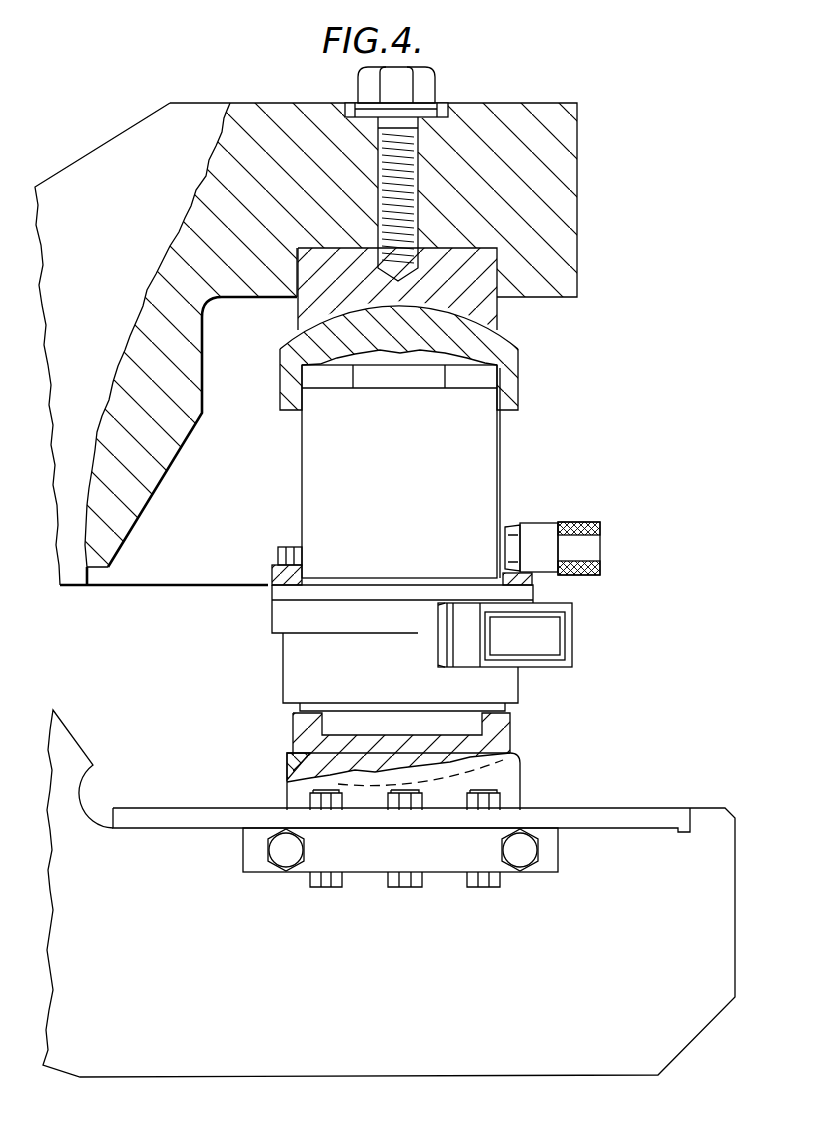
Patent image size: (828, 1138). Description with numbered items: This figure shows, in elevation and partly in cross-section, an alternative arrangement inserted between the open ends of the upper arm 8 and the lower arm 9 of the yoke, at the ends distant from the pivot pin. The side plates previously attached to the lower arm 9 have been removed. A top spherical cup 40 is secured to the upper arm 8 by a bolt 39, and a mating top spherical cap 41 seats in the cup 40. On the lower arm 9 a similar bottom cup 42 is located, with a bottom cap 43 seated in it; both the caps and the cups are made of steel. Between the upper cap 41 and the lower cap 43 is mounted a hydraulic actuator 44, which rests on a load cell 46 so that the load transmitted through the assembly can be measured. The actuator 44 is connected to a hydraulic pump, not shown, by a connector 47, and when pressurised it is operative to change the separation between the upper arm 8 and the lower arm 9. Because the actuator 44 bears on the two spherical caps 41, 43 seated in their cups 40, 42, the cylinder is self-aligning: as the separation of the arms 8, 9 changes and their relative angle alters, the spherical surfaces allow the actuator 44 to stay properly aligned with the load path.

The upper arm 8 is at (563, 168).
The bolt 39 is at (408, 83).
The top spherical cup 40 is at (497, 313).
The top spherical cap 41 is at (510, 362).
The hydraulic actuator 44 is at (497, 452).
The connector 47 is at (590, 547).
The load cell 46 is at (300, 673).
The bottom spherical cap 43 is at (513, 718).
The bottom spherical cup 42 is at (512, 777).
The lower arm 9 is at (648, 850).